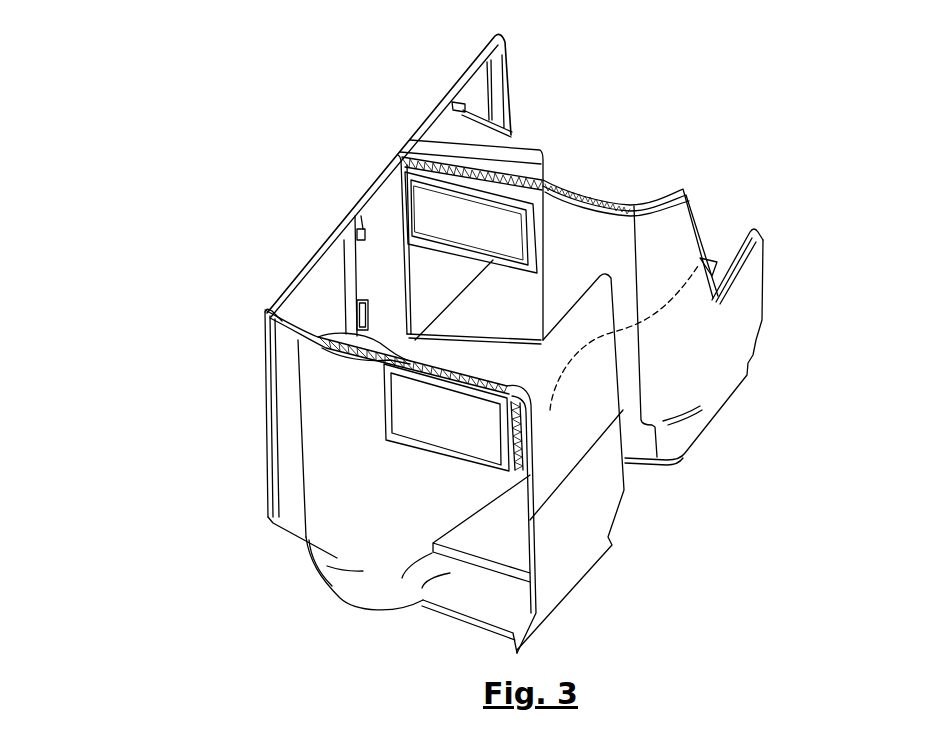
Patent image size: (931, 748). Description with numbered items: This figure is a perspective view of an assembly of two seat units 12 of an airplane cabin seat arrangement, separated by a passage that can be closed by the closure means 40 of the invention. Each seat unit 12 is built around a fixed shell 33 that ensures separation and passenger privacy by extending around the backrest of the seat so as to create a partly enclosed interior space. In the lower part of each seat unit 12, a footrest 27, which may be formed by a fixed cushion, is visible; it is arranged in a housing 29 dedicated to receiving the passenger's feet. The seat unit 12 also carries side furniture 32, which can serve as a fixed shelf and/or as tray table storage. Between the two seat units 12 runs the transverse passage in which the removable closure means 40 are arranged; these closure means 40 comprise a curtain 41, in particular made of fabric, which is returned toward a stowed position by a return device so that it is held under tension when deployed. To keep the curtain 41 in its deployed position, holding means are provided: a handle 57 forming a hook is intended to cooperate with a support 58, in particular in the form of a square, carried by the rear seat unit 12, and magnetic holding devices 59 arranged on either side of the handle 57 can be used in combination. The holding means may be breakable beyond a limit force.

The seat unit 12 is at (452, 31).
The footrest 27 is at (478, 310).
The housing 29 is at (487, 502).
The side furniture 32 is at (700, 263).
The fixed shell 33 is at (308, 371).
The closure means 40 is at (357, 208).
The curtain 41 is at (398, 158).
The handle 57 is at (357, 317).
The support 58 is at (267, 309).
The magnetic holding device 59 is at (396, 186).